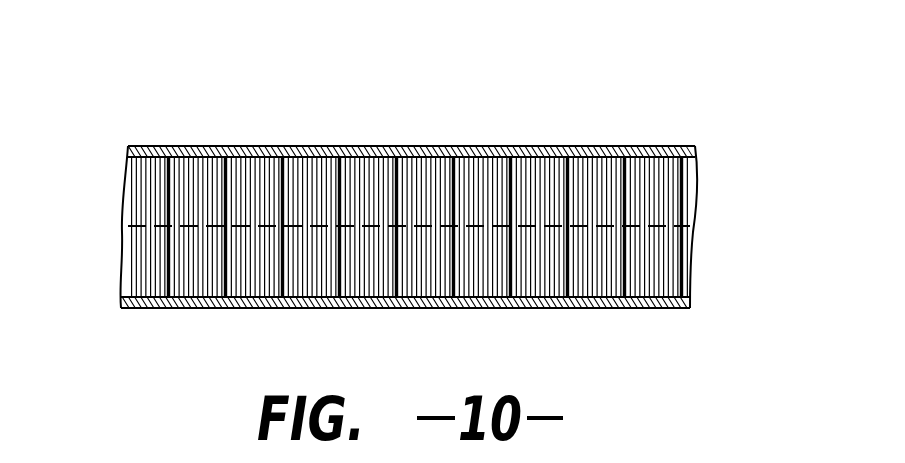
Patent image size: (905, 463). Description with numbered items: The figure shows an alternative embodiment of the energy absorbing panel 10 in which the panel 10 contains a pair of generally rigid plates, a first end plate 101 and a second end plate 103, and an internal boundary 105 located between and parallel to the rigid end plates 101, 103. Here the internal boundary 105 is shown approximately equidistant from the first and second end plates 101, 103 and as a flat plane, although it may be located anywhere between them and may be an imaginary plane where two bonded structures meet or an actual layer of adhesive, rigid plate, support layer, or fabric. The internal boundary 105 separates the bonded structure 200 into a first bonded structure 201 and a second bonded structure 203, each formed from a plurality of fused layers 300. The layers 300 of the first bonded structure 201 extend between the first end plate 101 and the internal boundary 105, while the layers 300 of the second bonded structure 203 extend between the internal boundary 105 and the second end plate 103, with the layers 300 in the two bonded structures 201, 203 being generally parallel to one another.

The energy absorbing panel 10 is at (588, 108).
The first end plate 101 is at (400, 152).
The second end plate 103 is at (541, 302).
The internal boundary 105 is at (688, 227).
The bonded structure 200 is at (423, 226).
The first bonded structure 201 is at (108, 158).
The second bonded structure 203 is at (108, 230).
The fused layers 300 is at (306, 172).